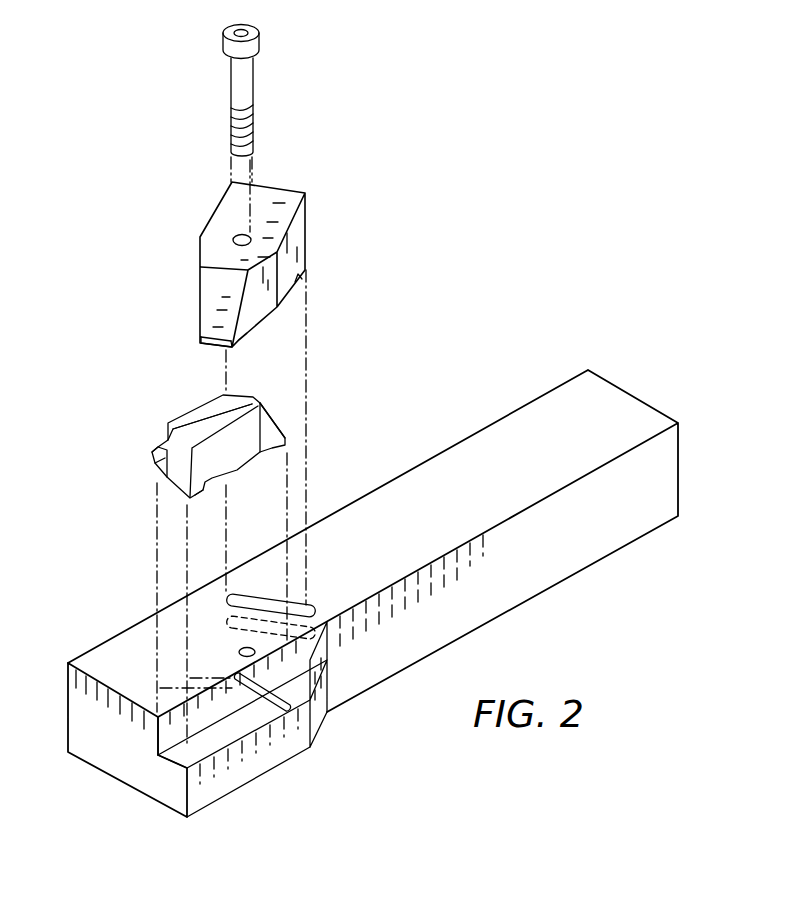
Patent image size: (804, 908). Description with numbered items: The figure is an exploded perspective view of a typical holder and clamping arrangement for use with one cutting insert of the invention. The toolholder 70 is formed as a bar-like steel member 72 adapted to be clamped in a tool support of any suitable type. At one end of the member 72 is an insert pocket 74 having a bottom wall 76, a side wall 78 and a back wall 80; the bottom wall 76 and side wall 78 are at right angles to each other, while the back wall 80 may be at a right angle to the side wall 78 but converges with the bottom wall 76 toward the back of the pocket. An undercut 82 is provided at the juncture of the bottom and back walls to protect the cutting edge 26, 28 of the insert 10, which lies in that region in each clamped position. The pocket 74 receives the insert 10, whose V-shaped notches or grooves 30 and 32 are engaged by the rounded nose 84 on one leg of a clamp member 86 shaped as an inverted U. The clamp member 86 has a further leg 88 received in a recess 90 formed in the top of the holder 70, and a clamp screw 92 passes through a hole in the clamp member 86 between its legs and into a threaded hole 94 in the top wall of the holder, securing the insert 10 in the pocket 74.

The insert 10 is at (210, 443).
The cutting edge 26 is at (152, 457).
The cutting edge 28 is at (285, 442).
The V shaped groove 30 is at (203, 415).
The V shaped groove 32 is at (225, 485).
The toolholder 70 is at (373, 553).
The bar-like steel member 72 is at (373, 600).
The insert pocket 74 is at (165, 763).
The bottom wall 76 is at (248, 733).
The side wall 78 is at (160, 733).
The back wall 80 is at (237, 677).
The undercut 82 is at (313, 722).
The rounded nose 84 is at (207, 350).
The clamp member 86 is at (260, 266).
The further leg 88 is at (302, 277).
The recess 90 is at (305, 609).
The clamp screw 92 is at (240, 78).
The threaded hole 94 is at (243, 648).